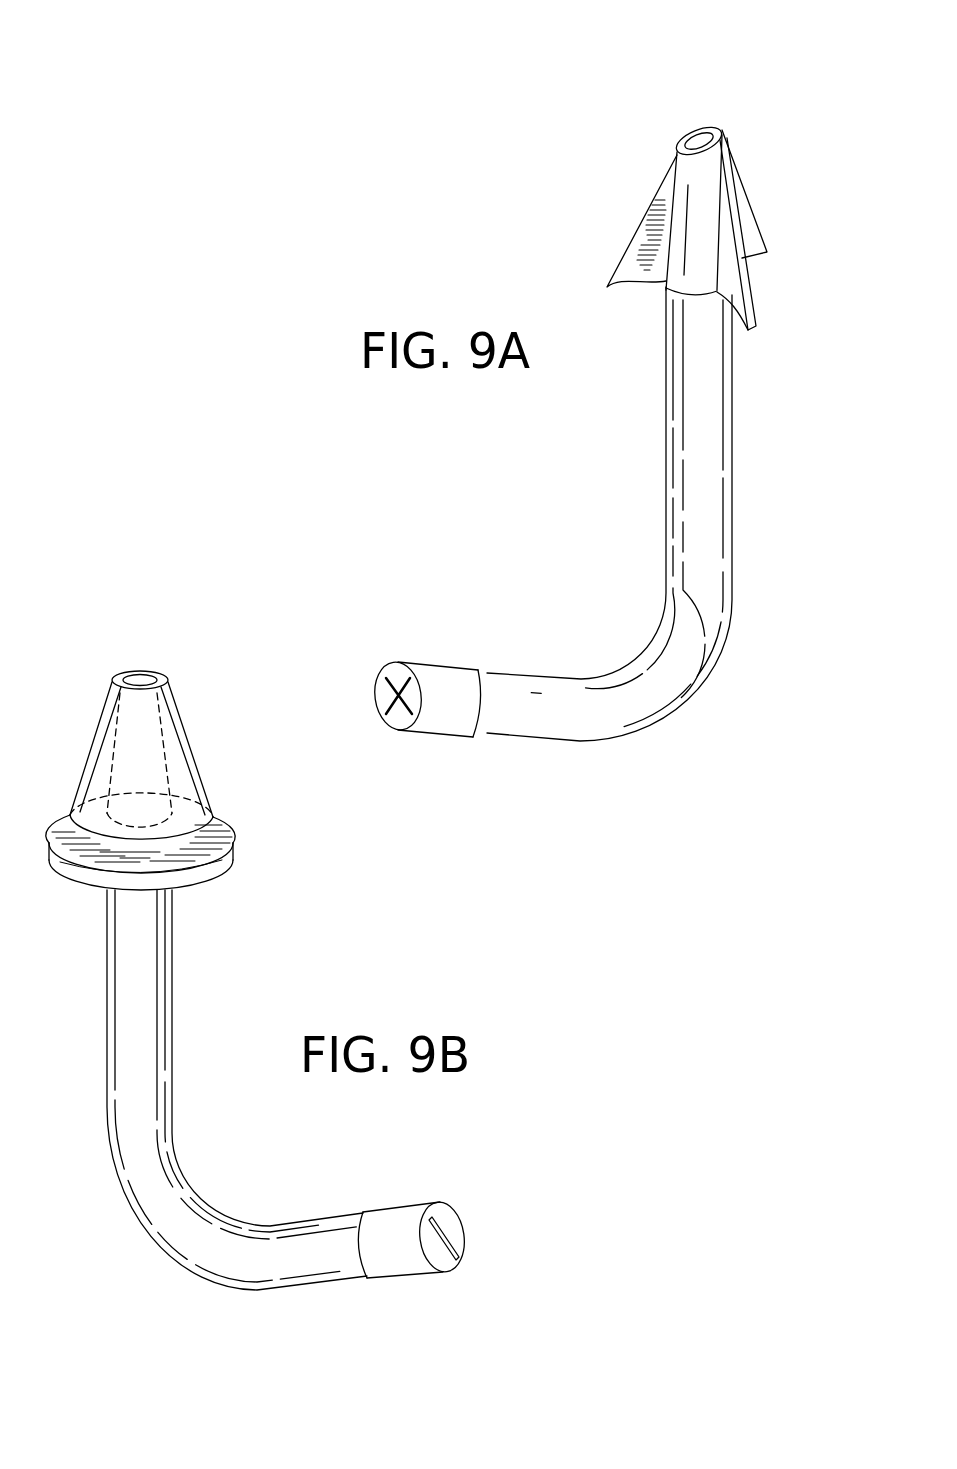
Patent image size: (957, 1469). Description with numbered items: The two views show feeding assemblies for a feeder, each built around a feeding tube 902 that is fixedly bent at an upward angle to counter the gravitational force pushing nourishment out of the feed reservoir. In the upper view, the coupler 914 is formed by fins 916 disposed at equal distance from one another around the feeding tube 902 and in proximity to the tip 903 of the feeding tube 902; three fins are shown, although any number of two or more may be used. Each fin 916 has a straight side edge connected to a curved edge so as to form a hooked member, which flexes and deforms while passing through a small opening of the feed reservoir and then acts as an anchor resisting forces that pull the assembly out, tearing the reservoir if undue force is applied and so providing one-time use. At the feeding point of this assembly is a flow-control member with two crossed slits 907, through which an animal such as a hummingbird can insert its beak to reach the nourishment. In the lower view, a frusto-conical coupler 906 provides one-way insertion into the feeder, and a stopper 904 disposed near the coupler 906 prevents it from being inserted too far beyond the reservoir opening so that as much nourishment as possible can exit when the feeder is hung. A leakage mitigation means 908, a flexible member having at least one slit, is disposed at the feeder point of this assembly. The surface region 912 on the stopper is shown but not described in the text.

In FIG. 9A, the feeding tube 902 is at (527, 722).
In FIG. 9B, the feeding tube 902 is at (300, 1262).
In FIG. 9A, the tip 903 is at (695, 124).
In FIG. 9B, the stopper 904 is at (212, 868).
In FIG. 9B, the coupler 906 is at (178, 725).
In FIG. 9A, the two crossed slits 907 is at (400, 670).
In FIG. 9B, the leakage mitigation means 908 is at (450, 1237).
In FIG. 9B, the roughened flange surface 912 is at (220, 828).
In FIG. 9A, the coupler 914 is at (746, 194).
In FIG. 9A, the fins 916 is at (652, 230).